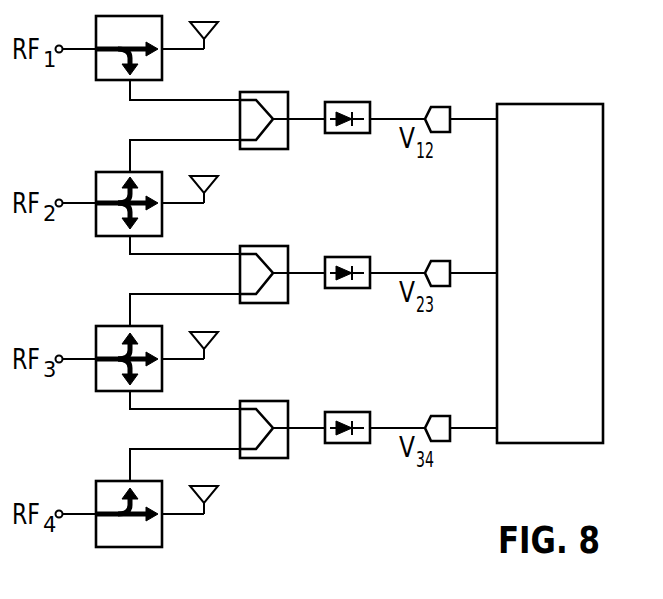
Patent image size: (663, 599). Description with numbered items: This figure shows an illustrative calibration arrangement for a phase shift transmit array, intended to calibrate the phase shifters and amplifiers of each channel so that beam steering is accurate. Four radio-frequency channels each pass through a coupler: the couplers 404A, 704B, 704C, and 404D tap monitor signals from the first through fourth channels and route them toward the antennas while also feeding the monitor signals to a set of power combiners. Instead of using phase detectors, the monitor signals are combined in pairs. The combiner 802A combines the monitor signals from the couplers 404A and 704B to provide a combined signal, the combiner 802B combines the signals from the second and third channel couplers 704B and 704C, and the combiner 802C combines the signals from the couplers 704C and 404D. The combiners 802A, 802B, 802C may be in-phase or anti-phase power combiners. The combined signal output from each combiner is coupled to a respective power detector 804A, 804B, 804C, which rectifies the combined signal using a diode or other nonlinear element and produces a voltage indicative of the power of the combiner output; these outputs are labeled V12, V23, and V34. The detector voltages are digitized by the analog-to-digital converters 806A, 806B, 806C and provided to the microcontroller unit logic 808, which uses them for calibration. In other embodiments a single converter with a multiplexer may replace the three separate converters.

The coupler 404A is at (109, 82).
The coupler 704B is at (110, 238).
The coupler 704C is at (110, 393).
The coupler 404D is at (110, 552).
The power combiner 802A is at (252, 91).
The power combiner 802B is at (252, 245).
The power combiner 802C is at (252, 400).
The power detector 804A is at (337, 102).
The power detector 804B is at (337, 257).
The power detector 804C is at (337, 412).
The ADC 806A is at (429, 108).
The ADC 806B is at (429, 262).
The ADC 806C is at (429, 417).
The microcontroller unit (MCU) logic 808 is at (520, 103).